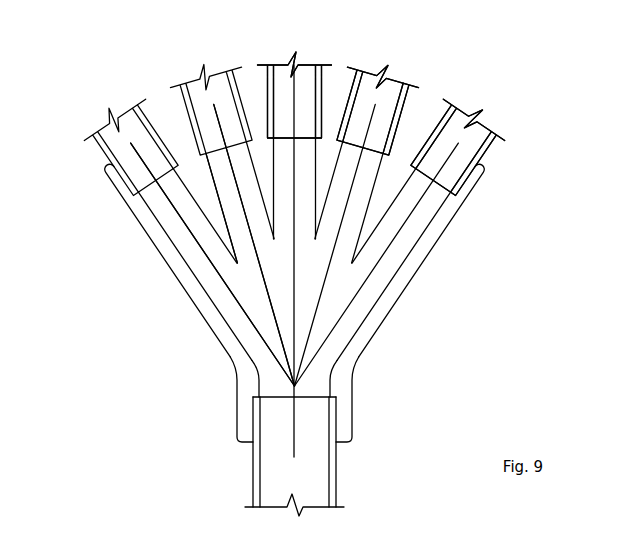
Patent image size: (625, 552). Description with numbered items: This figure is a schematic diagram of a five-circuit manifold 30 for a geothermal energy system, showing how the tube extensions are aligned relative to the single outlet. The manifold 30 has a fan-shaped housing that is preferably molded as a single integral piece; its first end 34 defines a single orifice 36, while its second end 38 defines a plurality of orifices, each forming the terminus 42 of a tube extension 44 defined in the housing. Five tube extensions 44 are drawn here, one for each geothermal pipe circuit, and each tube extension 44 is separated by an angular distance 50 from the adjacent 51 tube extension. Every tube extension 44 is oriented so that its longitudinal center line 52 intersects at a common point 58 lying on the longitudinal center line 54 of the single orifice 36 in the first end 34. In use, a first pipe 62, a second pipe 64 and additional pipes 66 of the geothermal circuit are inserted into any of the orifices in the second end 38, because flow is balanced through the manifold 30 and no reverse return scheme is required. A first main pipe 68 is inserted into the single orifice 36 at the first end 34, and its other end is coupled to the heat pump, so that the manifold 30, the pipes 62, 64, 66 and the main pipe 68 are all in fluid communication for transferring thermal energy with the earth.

The manifold 30 is at (152, 269).
The first end 34 is at (360, 430).
The single orifice 36 is at (340, 411).
The second end 38 is at (478, 201).
The terminus 42 is at (188, 119).
The tube extension 44 is at (139, 205).
The angular distance 50 is at (257, 265).
The adjacent tube extension 51 is at (215, 205).
The longitudinal center line 52 is at (247, 323).
The longitudinal center line 54 is at (297, 447).
The point 58 is at (288, 388).
The first pipe 62 is at (492, 147).
The second pipe 64 is at (407, 100).
The additional pipe 66 is at (323, 78).
The first main pipe 68 is at (252, 486).